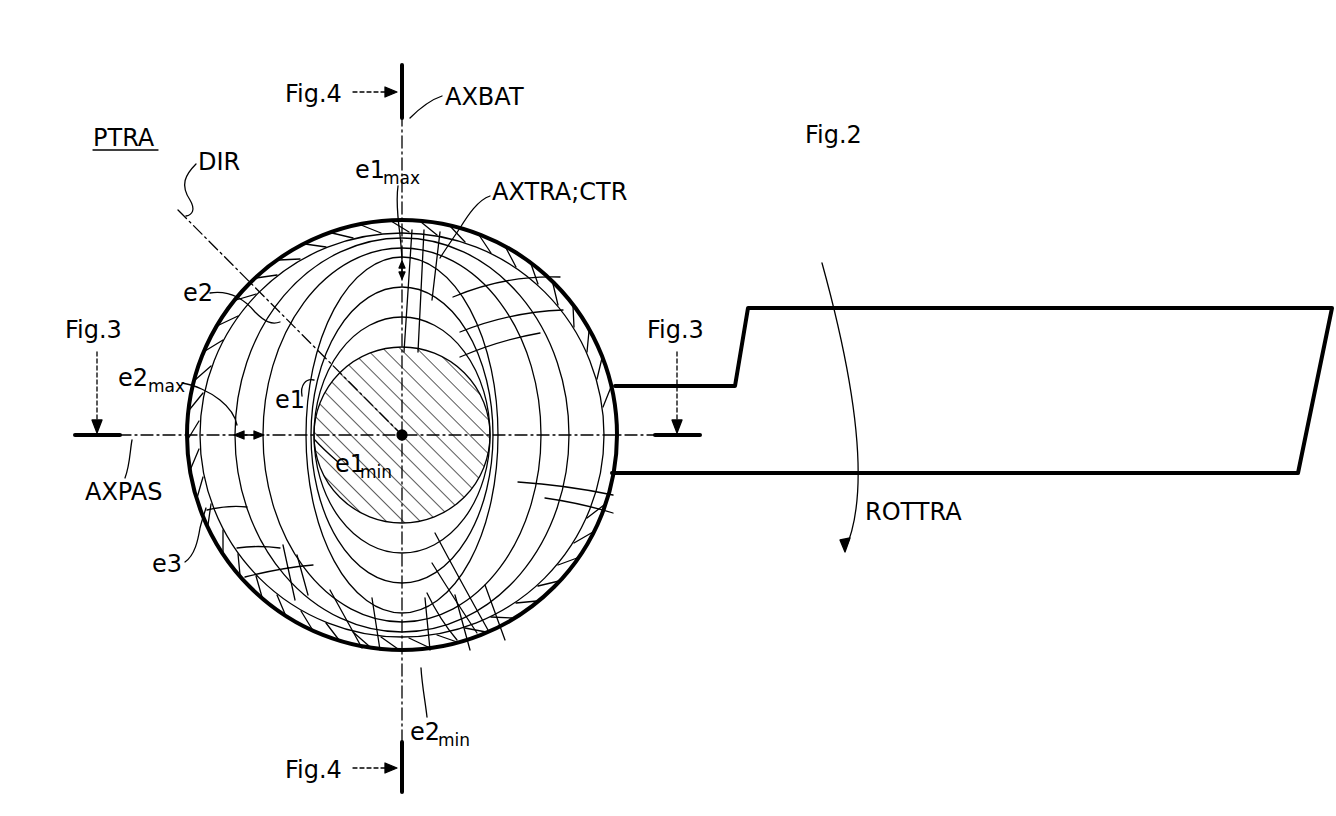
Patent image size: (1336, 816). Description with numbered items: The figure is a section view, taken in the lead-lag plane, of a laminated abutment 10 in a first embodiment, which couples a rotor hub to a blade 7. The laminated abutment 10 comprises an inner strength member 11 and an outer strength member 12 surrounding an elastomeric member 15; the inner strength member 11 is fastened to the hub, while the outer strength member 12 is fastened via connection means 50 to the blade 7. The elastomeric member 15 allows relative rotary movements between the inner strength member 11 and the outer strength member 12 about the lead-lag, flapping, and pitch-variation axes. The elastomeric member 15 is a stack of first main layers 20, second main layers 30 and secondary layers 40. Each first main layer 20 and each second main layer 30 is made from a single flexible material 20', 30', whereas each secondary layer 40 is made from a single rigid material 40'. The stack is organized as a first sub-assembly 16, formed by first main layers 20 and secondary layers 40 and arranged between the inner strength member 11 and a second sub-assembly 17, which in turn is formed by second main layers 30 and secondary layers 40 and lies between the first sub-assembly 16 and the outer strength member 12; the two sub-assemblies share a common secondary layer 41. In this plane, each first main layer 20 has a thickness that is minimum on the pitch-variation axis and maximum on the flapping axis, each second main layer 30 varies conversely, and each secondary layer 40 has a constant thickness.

The blade 7 is at (1107, 306).
The laminated abutment 10 is at (224, 704).
The inner strength member 11 is at (452, 484).
The outer strength member 12 is at (585, 557).
The elastomeric member 15 is at (280, 566).
The first sub-assembly 16 is at (540, 305).
The second sub-assembly 17 is at (247, 550).
The first main layer 20 is at (495, 614).
The flexible material of first main layer 20' is at (341, 653).
The second main layer 30 is at (630, 520).
The flexible material of second main layer 30' is at (602, 525).
The secondary layer 40 is at (392, 240).
The rigid material 40' is at (441, 231).
The common secondary layer 41 is at (297, 595).
The connection means 50 is at (425, 652).